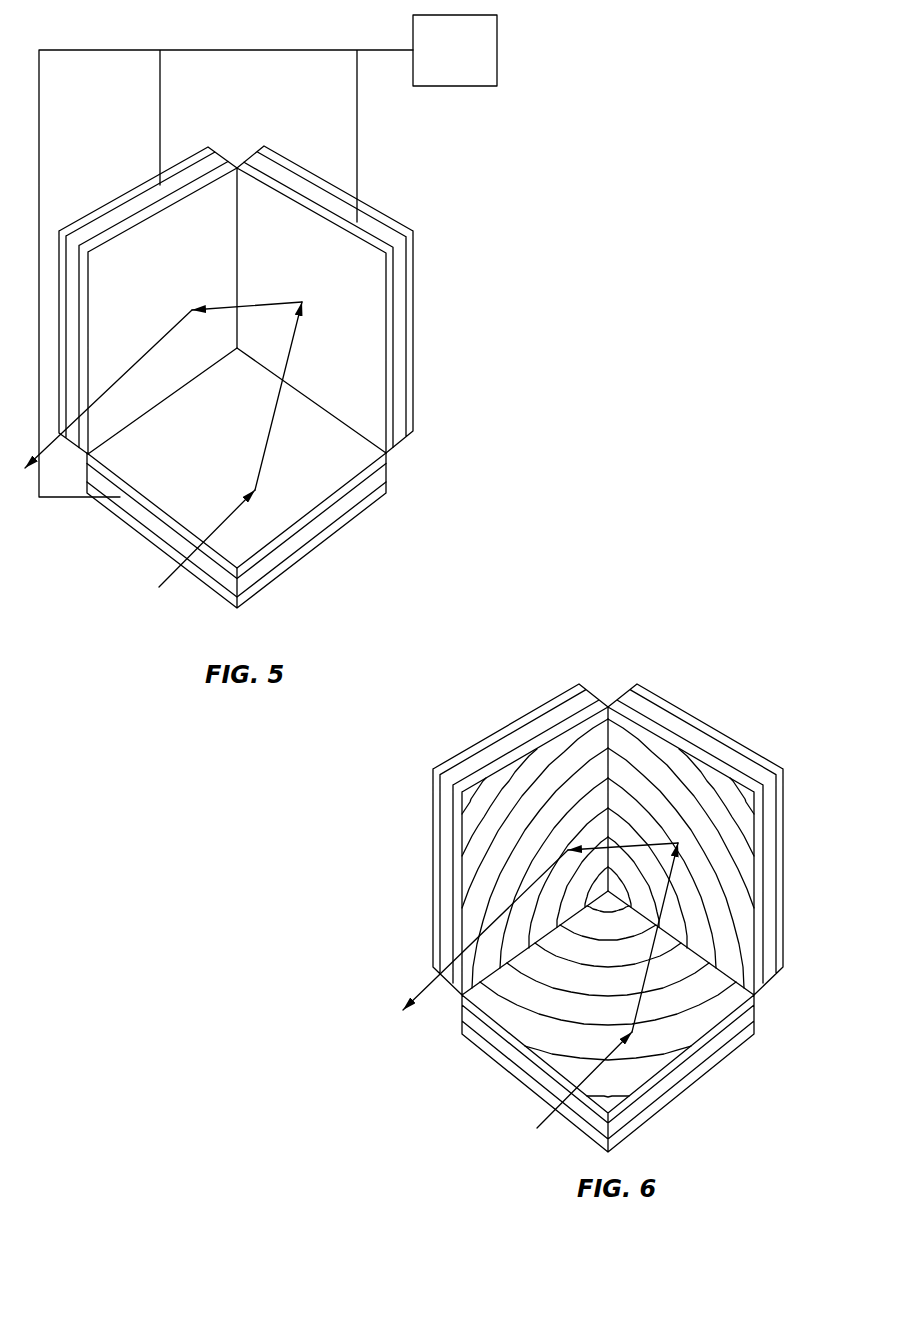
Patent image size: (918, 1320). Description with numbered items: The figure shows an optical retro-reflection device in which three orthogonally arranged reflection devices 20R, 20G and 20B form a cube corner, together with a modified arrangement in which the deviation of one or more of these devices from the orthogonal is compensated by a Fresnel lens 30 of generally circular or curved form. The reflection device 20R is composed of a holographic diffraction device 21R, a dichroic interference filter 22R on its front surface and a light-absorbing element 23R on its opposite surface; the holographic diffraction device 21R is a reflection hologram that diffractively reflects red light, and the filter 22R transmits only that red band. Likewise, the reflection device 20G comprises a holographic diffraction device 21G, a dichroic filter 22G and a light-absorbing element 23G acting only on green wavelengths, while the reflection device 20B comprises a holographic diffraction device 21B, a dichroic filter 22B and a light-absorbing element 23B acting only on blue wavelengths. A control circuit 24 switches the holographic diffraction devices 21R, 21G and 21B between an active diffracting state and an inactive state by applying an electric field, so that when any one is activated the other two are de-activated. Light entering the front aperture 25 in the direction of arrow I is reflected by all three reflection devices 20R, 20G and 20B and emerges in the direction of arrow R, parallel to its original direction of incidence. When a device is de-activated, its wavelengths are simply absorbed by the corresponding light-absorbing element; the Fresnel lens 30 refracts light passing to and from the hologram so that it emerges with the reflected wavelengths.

In FIG. 5, the reflection device 20R is at (188, 259).
In FIG. 6, the reflection device 20R is at (502, 750).
In FIG. 5, the holographic diffraction device 21R is at (187, 180).
In FIG. 5, the filter 22R is at (200, 185).
In FIG. 5, the light-absorbing element 23R is at (173, 168).
In FIG. 5, the reflection device 20G is at (375, 299).
In FIG. 6, the reflection device 20G is at (730, 758).
In FIG. 5, the holographic diffraction device 21G is at (398, 333).
In FIG. 5, the dichroic filter 22G is at (390, 302).
In FIG. 5, the light-absorbing element 23G is at (409, 366).
In FIG. 5, the reflection device 20B is at (240, 535).
In FIG. 6, the reflection device 20B is at (608, 1029).
In FIG. 5, the holographic diffraction device 21B is at (312, 528).
In FIG. 5, the dichroic filter 22B is at (330, 502).
In FIG. 5, the light-absorbing element 23B is at (292, 557).
In FIG. 5, the control circuit 24 is at (497, 53).
In FIG. 5, the front aperture 25 is at (245, 541).
In FIG. 6, the Fresnel lens 30 is at (535, 1027).
In FIG. 5, the arrow R is at (165, 332).
In FIG. 5, the arrow I is at (218, 523).